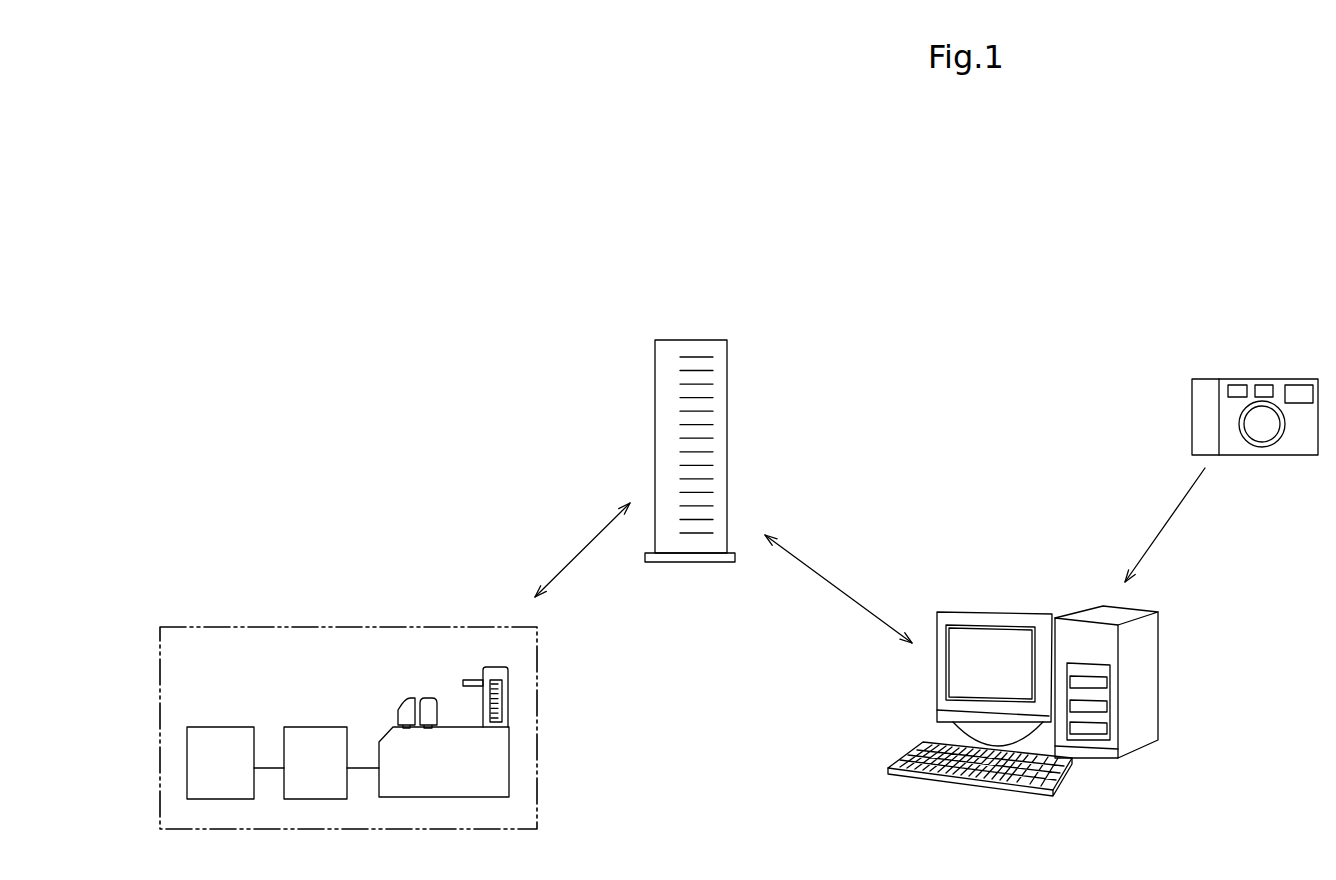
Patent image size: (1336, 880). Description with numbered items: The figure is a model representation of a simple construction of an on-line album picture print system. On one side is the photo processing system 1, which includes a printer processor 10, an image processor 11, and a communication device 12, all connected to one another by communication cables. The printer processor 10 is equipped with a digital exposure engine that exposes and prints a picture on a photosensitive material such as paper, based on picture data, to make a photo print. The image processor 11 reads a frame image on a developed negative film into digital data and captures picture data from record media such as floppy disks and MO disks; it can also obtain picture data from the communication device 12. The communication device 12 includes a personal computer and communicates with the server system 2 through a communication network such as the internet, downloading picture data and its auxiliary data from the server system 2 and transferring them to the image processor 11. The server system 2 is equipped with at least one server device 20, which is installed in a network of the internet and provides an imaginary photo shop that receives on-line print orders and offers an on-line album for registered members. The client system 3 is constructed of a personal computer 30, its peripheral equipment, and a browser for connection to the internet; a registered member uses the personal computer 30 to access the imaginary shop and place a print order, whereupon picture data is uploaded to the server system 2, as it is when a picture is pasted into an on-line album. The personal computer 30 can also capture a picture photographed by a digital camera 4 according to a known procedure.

The photo processing system 1 is at (408, 615).
The printer processor 10 is at (509, 760).
The image processor 11 is at (317, 727).
The communication device 12 is at (227, 727).
The server system 2 is at (727, 397).
The server device 20 is at (727, 381).
The client system 3 is at (1023, 578).
The personal computer 30 is at (1000, 612).
The digital camera 4 is at (1265, 379).